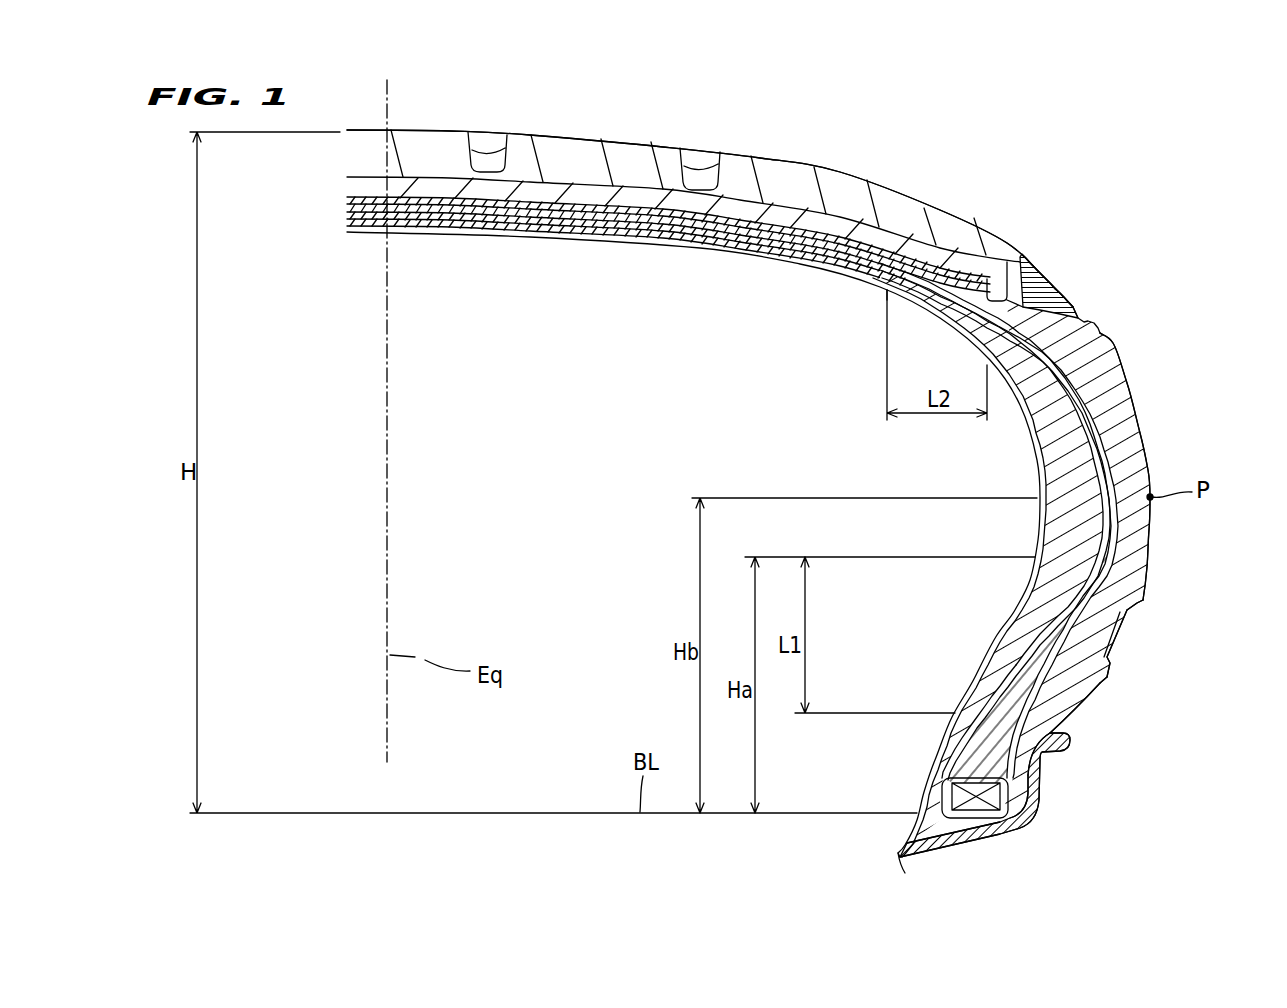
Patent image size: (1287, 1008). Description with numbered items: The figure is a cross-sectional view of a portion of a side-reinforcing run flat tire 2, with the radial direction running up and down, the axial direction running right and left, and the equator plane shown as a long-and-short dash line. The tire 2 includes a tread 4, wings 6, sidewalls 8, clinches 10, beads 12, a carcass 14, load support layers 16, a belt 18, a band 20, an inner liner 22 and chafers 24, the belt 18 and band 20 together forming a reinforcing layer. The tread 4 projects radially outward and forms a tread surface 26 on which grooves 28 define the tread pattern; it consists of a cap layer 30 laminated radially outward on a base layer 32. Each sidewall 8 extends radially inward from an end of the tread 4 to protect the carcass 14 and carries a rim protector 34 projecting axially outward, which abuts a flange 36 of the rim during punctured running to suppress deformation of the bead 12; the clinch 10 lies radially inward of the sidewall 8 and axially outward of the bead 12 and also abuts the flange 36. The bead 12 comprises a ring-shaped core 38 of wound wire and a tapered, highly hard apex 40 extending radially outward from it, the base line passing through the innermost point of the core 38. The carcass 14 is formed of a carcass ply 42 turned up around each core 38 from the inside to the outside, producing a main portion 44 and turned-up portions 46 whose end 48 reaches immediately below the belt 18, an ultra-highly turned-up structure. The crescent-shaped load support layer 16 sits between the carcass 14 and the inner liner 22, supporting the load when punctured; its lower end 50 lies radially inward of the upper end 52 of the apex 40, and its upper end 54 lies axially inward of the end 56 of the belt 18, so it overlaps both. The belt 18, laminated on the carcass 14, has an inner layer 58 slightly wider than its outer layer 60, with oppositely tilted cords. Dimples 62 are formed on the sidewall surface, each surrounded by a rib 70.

The run flat tire 2 is at (1247, 153).
The tread 4 is at (847, 167).
The wing 6 is at (1042, 293).
The sidewall 8 is at (1127, 564).
The clinch 10 is at (1053, 700).
The bead 12 is at (832, 742).
The carcass 14 is at (1097, 373).
The load support layer 16 is at (1067, 528).
The belt 18 is at (258, 183).
The band 20 is at (430, 193).
The inner liner 22 is at (530, 233).
The chafer 24 is at (1013, 773).
The tread surface 26 is at (753, 150).
The groove 28 is at (477, 158).
The cap layer 30 is at (568, 160).
The base layer 32 is at (638, 197).
The rim protector 34 is at (1105, 685).
The flange 36 is at (1037, 808).
The core 38 is at (952, 796).
The apex 40 is at (983, 747).
The carcass ply 42 is at (995, 521).
The main portion 44 is at (1062, 452).
The turned-up portion 46 is at (1115, 400).
The end of turned-up portion 48 is at (817, 252).
The lower end of support layer 50 is at (960, 710).
The upper end of apex 52 is at (1115, 547).
The upper end of support layer 54 is at (887, 280).
The end of belt 56 is at (1003, 267).
The inner layer 58 is at (347, 214).
The outer layer 60 is at (347, 205).
The dimple 62 is at (1112, 637).
The rib 70 is at (1145, 601).